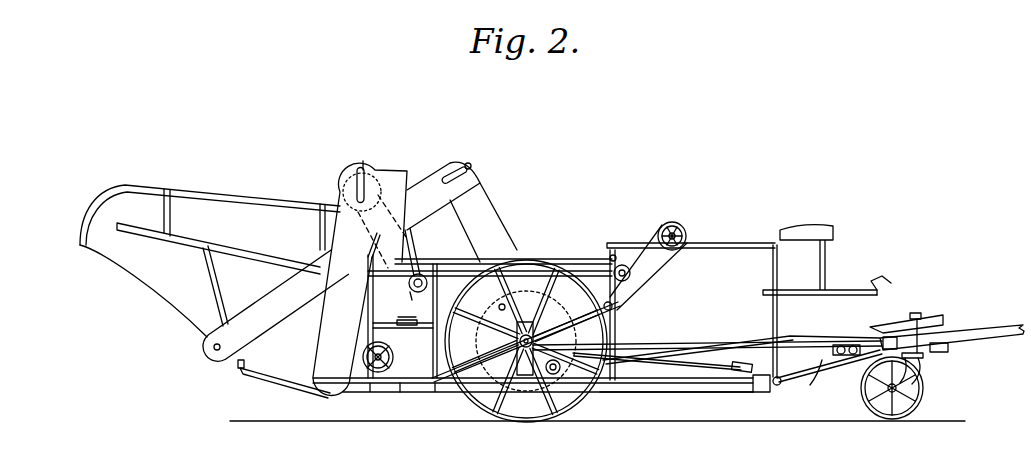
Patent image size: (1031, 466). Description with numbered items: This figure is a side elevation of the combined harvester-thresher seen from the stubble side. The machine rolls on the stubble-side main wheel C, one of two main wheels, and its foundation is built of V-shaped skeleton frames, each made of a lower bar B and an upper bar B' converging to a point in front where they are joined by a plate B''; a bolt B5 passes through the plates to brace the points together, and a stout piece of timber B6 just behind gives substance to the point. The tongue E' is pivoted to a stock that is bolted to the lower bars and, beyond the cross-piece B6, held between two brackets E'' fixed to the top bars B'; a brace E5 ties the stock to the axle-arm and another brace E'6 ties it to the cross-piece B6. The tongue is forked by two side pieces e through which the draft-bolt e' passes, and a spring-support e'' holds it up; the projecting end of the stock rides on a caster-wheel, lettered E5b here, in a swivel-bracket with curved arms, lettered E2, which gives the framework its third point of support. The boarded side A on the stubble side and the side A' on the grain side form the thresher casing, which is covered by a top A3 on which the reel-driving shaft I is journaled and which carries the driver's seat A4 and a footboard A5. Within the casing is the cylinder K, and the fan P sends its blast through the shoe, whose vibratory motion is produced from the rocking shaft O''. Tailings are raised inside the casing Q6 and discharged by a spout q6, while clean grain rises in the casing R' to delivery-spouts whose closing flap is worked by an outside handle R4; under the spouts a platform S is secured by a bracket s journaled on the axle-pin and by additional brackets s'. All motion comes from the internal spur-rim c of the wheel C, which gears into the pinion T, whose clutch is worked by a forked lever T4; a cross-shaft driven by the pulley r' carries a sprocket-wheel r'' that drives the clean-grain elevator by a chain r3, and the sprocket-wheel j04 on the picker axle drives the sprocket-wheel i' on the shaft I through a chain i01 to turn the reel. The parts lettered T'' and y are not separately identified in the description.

The boarded side A is at (210, 264).
The casing Q6 is at (276, 306).
The rocking shaft O'' is at (276, 379).
The casing R' is at (360, 279).
The forked lever T4 is at (341, 188).
The chain r3 is at (393, 195).
The handle R4 is at (410, 231).
The spout q6 is at (479, 212).
The pinion T is at (503, 250).
The frame rail T'' is at (490, 253).
The main wheel C is at (572, 260).
The platform S is at (403, 383).
The brackets s' is at (416, 396).
The fan P is at (398, 347).
The pulley r' is at (409, 299).
The sprocket-wheel r'' is at (415, 304).
The internal spur-rim c is at (526, 390).
The bracket s is at (491, 348).
The cylinder K is at (526, 342).
The pinion y is at (561, 372).
The top A3 is at (620, 243).
The reel-driving shaft I is at (690, 240).
The sprocket-wheel i' is at (681, 227).
The chain i01 is at (640, 282).
The sprocket-wheel j04 is at (616, 308).
The driver's seat A4 is at (826, 230).
The footboard A5 is at (890, 278).
The upper bar B' is at (707, 335).
The lower bar B is at (676, 406).
The tongue E' is at (813, 353).
The brace E5 is at (690, 358).
The brackets E'' is at (752, 343).
The piece of timber B6 is at (753, 385).
The plate B'' is at (779, 396).
The bolt B5 is at (833, 354).
The brace E'6 is at (828, 390).
The boarded side A' is at (700, 322).
The draft-bolt e' is at (921, 317).
The side pieces e is at (922, 312).
The spring-support e'' is at (961, 349).
The caster fork E2 is at (920, 372).
The caster wheel E5b is at (923, 392).